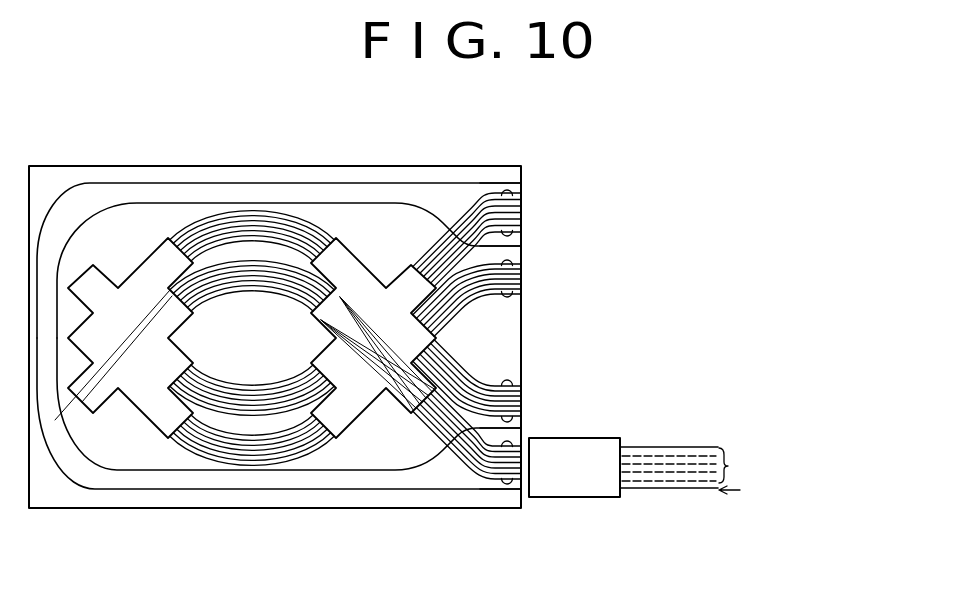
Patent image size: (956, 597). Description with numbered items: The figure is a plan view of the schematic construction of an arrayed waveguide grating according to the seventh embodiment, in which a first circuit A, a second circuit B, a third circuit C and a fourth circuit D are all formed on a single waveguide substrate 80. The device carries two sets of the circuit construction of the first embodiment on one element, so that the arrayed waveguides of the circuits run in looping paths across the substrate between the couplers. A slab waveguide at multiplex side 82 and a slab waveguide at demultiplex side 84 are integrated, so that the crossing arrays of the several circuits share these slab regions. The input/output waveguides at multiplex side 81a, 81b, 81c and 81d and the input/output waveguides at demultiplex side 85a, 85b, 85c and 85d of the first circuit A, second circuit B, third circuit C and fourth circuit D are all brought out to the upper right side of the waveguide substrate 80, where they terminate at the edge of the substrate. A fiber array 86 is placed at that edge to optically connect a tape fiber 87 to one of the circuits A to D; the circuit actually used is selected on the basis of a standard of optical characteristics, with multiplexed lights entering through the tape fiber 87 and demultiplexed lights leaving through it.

The waveguide substrate 80 is at (405, 168).
The slab waveguide at multiplex side 82 is at (82, 338).
The slab waveguide at demultiplex side 84 is at (407, 283).
The first circuit A is at (212, 488).
The second circuit B is at (203, 183).
The third circuit C is at (305, 471).
The fourth circuit D is at (290, 203).
The input/output waveguide at multiplex side 81a is at (438, 488).
The input/output waveguide at multiplex side 81b is at (505, 183).
The input/output waveguide at multiplex side 81c is at (521, 418).
The input/output waveguide at multiplex side 81d is at (505, 246).
The input/output waveguide at demultiplex side 85a is at (512, 483).
The input/output waveguide at demultiplex side 85b is at (521, 203).
The input/output waveguide at demultiplex side 85c is at (521, 380).
The input/output waveguide at demultiplex side 85d is at (515, 273).
The fiber array 86 is at (577, 497).
The tape fiber 87 is at (658, 447).